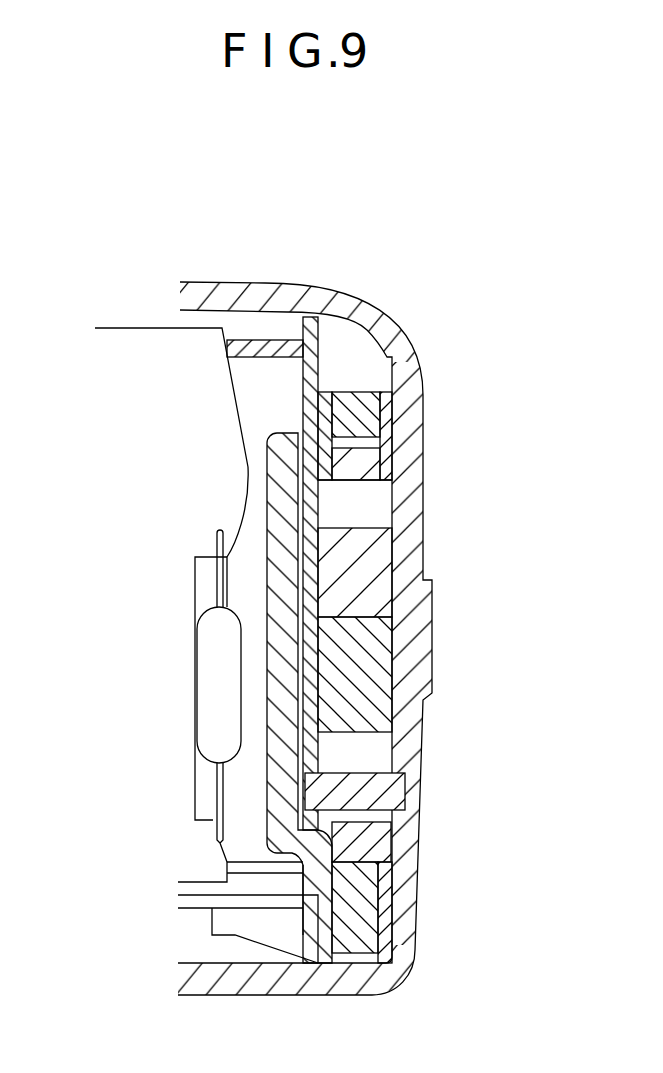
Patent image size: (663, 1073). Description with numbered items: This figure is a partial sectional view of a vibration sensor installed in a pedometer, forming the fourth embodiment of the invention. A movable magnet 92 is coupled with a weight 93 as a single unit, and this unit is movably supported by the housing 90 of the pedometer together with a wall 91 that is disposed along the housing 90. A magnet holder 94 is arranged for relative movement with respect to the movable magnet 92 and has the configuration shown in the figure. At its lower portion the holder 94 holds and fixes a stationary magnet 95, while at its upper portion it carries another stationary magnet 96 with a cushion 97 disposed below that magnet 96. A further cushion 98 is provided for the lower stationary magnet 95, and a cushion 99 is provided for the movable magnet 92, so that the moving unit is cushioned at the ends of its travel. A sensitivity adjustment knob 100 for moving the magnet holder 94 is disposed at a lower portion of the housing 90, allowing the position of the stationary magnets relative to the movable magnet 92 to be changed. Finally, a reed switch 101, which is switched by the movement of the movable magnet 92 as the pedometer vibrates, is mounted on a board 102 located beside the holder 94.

The housing 90 is at (380, 335).
The wall 91 is at (310, 743).
The movable magnet 92 is at (372, 693).
The weight 93 is at (360, 575).
The magnet holder 94 is at (253, 522).
The stationary magnet 95 is at (365, 920).
The stationary magnet 96 is at (360, 423).
The cushion 97 is at (353, 463).
The cushion 98 is at (365, 843).
The cushion 99 is at (385, 792).
The sensitivity adjustment knob 100 is at (225, 952).
The reed switch 101 is at (220, 670).
The board 102 is at (195, 435).